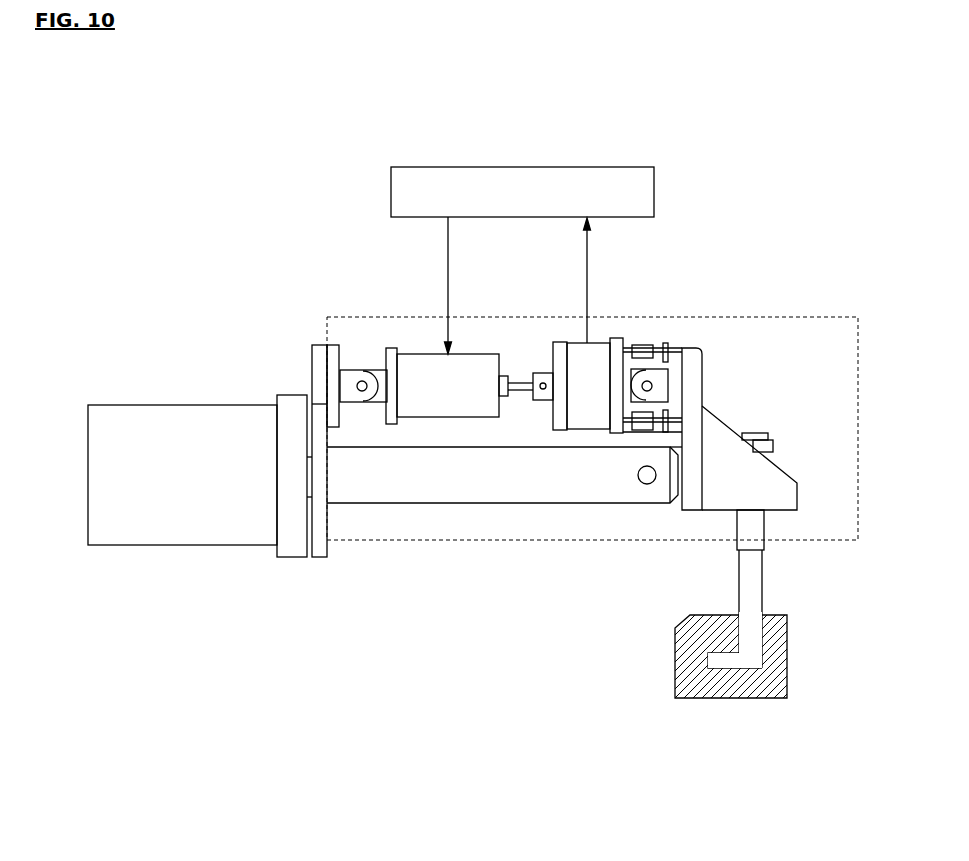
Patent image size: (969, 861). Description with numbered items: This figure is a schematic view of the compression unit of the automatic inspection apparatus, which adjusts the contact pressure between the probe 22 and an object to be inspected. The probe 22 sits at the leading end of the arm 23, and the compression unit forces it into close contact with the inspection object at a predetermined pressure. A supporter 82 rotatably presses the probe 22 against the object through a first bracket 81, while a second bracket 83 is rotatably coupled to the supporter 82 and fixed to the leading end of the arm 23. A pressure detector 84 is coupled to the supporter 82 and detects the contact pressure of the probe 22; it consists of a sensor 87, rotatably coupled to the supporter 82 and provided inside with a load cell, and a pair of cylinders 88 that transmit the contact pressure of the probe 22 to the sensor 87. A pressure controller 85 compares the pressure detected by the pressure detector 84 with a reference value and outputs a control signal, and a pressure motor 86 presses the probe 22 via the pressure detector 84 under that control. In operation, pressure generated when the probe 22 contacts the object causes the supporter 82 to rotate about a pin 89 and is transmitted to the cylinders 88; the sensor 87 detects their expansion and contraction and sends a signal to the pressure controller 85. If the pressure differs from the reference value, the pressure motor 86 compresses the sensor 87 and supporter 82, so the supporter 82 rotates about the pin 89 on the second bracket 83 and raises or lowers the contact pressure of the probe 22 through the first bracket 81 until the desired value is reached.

The probe 22 is at (797, 652).
The arm 23 is at (222, 536).
The first bracket 81 is at (772, 591).
The supporter 82 is at (738, 422).
The second bracket 83 is at (459, 515).
The pressure detector 84 is at (745, 282).
The pressure controller 85 is at (668, 187).
The pressure motor 86 is at (478, 342).
The sensor 87 is at (610, 327).
The pair of cylinders 88 is at (654, 402).
The pin 89 is at (638, 497).